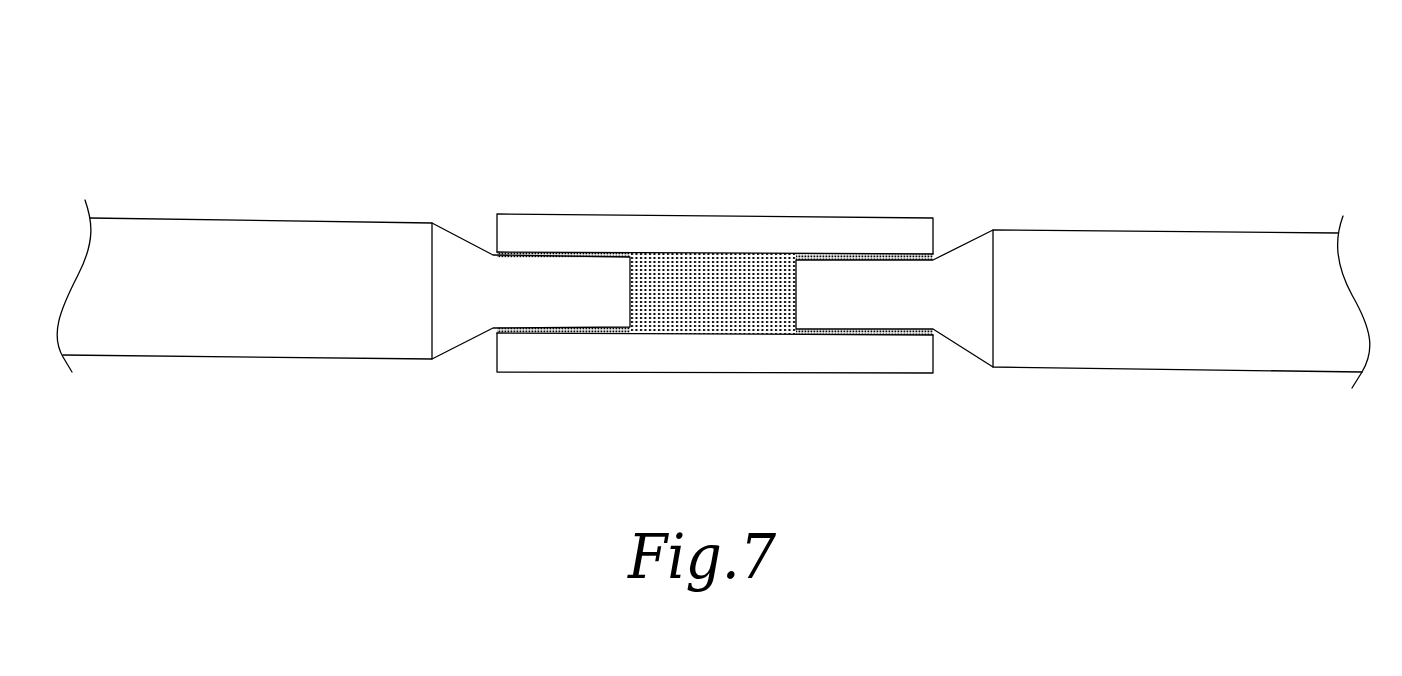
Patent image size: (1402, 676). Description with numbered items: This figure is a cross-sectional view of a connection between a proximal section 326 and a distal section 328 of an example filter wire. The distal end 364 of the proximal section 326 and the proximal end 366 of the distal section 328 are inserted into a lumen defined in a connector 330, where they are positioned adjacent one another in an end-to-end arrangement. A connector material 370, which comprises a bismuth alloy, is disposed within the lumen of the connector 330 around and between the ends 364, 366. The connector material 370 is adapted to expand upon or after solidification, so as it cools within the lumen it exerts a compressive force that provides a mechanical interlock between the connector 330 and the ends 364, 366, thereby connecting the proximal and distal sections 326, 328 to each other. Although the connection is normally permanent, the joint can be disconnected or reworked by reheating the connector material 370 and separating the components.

The proximal section 326 is at (272, 265).
The distal section 328 is at (1120, 288).
The connector 330 is at (665, 232).
The distal end of proximal section 364 is at (572, 293).
The proximal end of distal section 366 is at (865, 297).
The connector material 370 is at (717, 292).